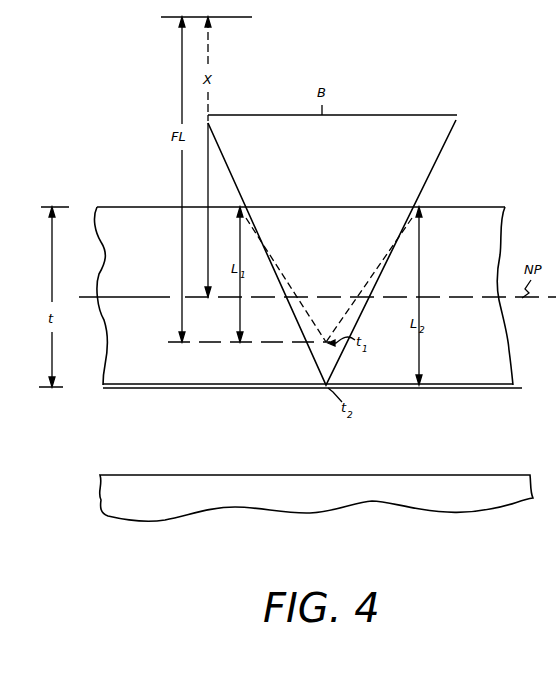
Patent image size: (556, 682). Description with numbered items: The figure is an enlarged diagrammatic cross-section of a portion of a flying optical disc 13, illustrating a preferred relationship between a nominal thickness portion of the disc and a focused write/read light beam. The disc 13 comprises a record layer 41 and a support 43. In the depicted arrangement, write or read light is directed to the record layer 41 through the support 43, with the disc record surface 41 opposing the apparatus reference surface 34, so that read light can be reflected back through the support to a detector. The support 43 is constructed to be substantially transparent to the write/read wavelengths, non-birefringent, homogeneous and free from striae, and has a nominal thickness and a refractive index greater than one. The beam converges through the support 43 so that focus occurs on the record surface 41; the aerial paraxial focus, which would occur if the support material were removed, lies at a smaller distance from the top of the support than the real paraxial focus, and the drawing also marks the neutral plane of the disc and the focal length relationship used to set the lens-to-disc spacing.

The disc 13 is at (143, 196).
The support 43 is at (479, 215).
The record layer 41 is at (478, 389).
The reference surface 34 is at (127, 474).